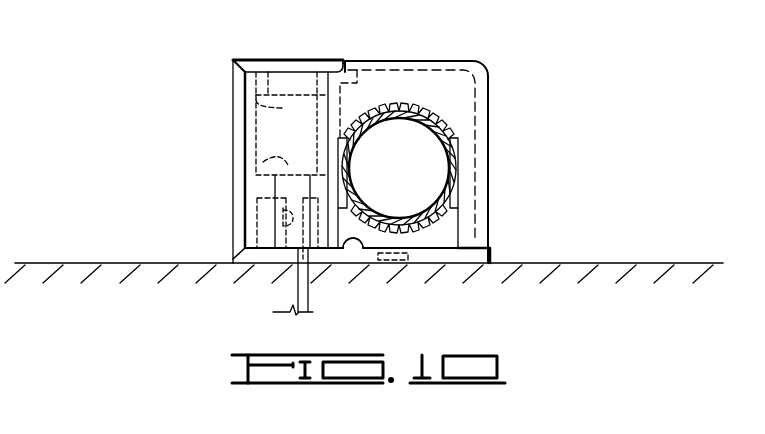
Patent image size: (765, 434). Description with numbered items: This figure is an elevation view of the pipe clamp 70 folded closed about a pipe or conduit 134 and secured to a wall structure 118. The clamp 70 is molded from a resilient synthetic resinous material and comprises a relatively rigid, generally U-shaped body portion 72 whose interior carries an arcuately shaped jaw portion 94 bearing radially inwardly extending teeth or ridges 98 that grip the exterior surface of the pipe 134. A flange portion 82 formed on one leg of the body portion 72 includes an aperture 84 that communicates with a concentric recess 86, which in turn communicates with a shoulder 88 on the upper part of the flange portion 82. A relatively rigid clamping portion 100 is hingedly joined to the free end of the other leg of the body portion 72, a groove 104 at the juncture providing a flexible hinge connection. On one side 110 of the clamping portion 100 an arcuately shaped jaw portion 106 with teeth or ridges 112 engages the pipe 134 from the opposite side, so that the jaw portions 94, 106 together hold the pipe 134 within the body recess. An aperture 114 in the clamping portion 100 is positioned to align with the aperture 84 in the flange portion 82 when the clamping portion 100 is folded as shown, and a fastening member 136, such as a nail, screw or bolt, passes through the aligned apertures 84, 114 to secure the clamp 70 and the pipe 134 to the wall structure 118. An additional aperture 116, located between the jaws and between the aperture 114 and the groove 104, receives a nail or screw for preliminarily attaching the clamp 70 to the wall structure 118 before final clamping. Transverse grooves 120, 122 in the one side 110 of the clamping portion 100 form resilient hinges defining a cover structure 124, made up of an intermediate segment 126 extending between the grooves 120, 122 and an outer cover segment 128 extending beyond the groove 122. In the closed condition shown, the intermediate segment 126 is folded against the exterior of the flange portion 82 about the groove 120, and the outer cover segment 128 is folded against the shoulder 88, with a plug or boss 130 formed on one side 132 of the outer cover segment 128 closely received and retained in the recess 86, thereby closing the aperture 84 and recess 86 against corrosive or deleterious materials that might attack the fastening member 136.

The pipe or conduit bracket clamp 70 is at (340, 164).
The body portion 72 is at (457, 63).
The flange portion 82 is at (245, 153).
The aperture 84 is at (287, 215).
The concentric recess 86 is at (263, 116).
The shoulder 88 is at (262, 70).
The jaw portion 94 is at (402, 98).
The teeth or ridges 98 is at (428, 118).
The clamping portion 100 is at (333, 258).
The groove 104 is at (493, 248).
The jaw portion 106 is at (377, 217).
The one side 110 is at (413, 265).
The teeth or ridges 112 is at (405, 220).
The aperture 114 is at (292, 258).
The additional aperture 116 is at (405, 265).
The wall structure 118 is at (548, 262).
The transverse groove 120 is at (232, 260).
The transverse groove 122 is at (233, 58).
The cover structure 124 is at (238, 78).
The intermediate segment 126 is at (237, 134).
The outer cover segment 128 is at (280, 62).
The plug or boss 130 is at (243, 102).
The one side 132 is at (300, 75).
The pipe or conduit 134 is at (459, 196).
The fastening member 136 is at (263, 163).